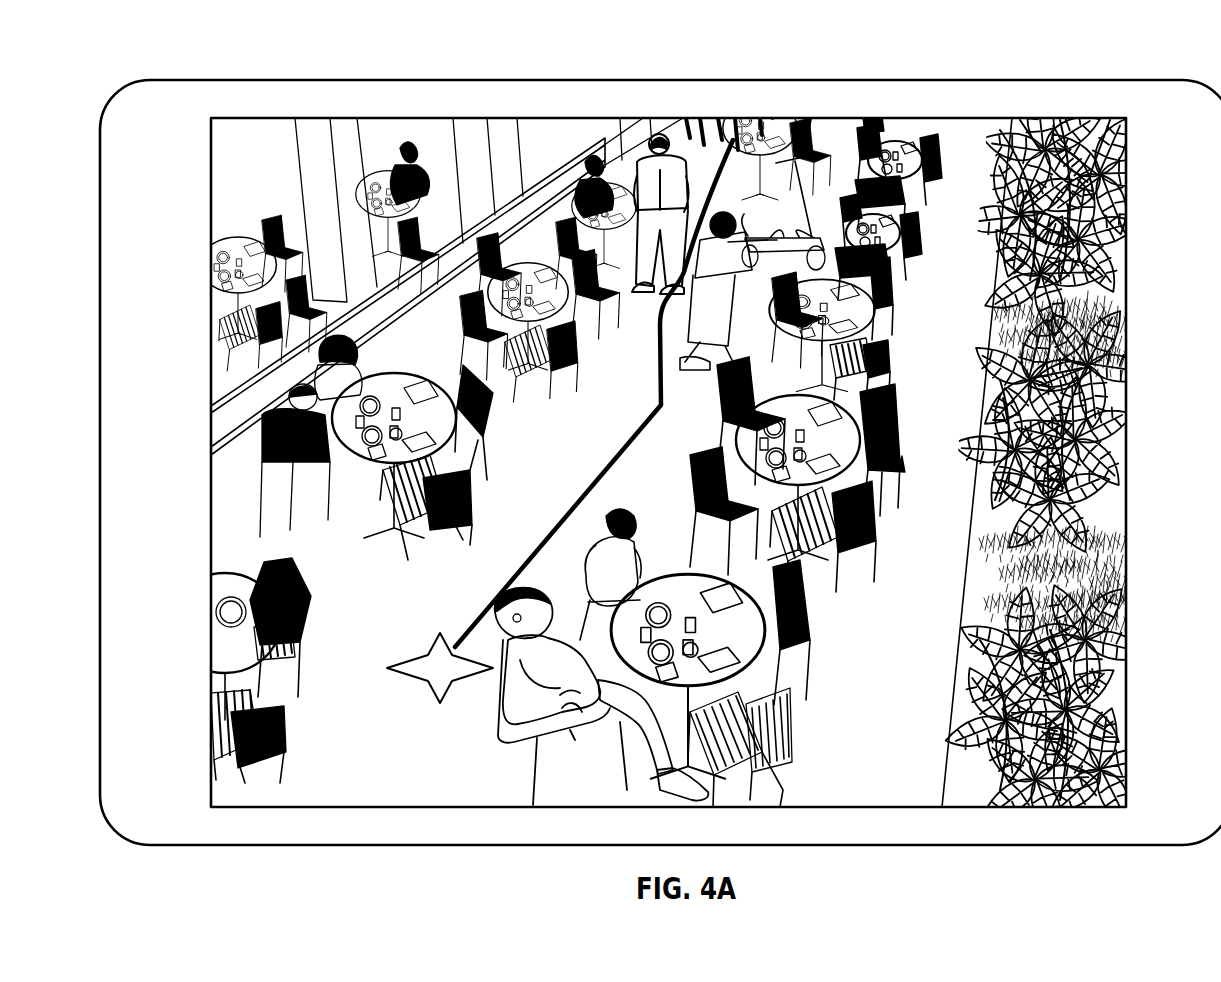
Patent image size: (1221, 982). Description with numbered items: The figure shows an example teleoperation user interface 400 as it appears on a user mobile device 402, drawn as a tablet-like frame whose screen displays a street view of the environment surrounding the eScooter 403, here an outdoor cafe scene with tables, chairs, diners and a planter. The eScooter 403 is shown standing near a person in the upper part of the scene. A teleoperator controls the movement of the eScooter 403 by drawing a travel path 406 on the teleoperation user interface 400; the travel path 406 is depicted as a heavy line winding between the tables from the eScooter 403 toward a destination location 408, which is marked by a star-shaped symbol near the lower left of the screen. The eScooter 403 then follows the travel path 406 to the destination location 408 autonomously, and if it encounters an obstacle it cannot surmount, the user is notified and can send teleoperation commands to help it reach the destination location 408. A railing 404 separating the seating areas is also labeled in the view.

The teleoperation user interface 400 is at (1128, 48).
The user mobile device 402 is at (168, 78).
The eScooter 403 is at (806, 155).
The railing 404 is at (470, 210).
The travel path 406 is at (733, 140).
The destination location 408 is at (438, 662).